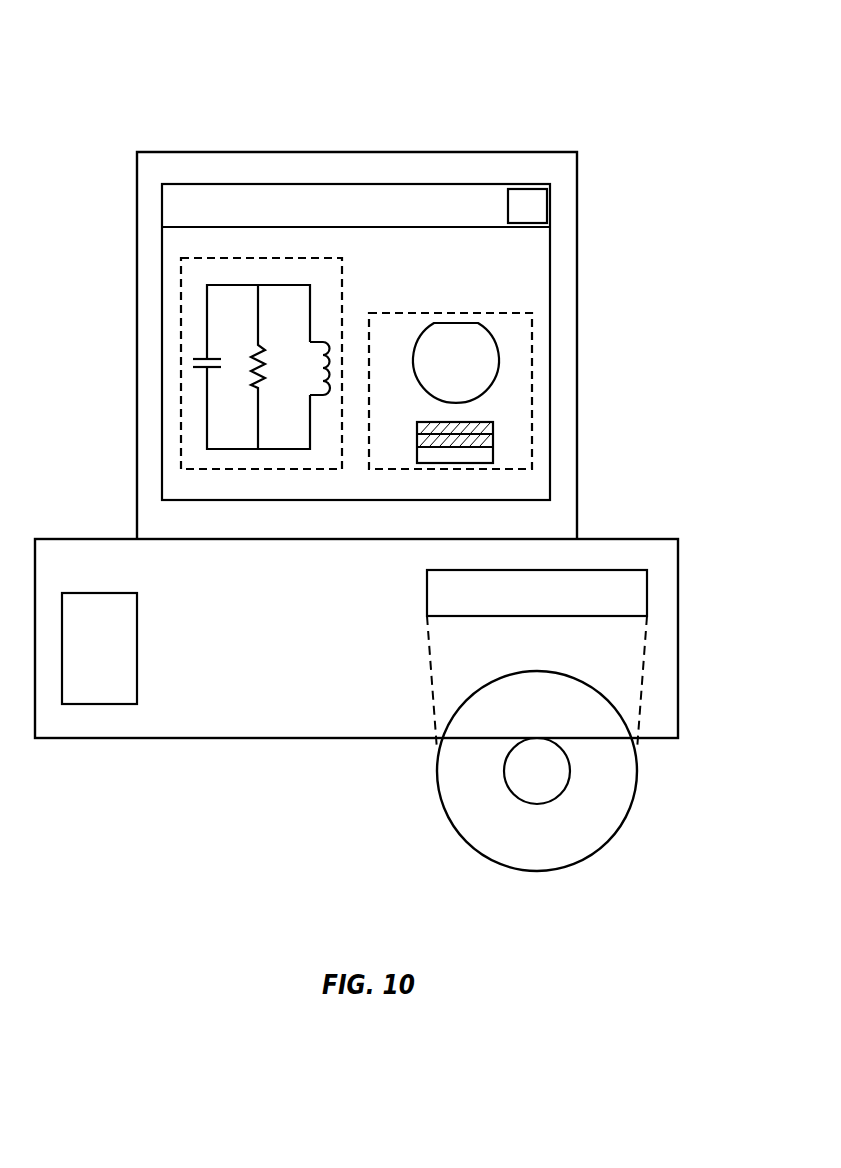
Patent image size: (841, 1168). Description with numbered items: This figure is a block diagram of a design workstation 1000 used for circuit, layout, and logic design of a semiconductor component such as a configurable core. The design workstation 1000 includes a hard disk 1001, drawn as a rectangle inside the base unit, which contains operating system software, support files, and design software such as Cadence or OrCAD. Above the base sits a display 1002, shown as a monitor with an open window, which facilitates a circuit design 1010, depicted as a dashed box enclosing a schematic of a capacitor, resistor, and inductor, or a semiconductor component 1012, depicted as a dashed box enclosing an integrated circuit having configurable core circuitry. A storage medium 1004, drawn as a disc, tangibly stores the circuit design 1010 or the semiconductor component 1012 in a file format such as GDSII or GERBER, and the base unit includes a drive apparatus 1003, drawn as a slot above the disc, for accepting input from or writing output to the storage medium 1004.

The design workstation 1000 is at (130, 67).
The hard disk 1001 is at (137, 617).
The display device 1002 is at (515, 152).
The drive apparatus 1003 is at (637, 568).
The storage medium 1004 is at (532, 872).
The circuit design 1010 is at (343, 281).
The semiconductor component 1012 is at (463, 313).